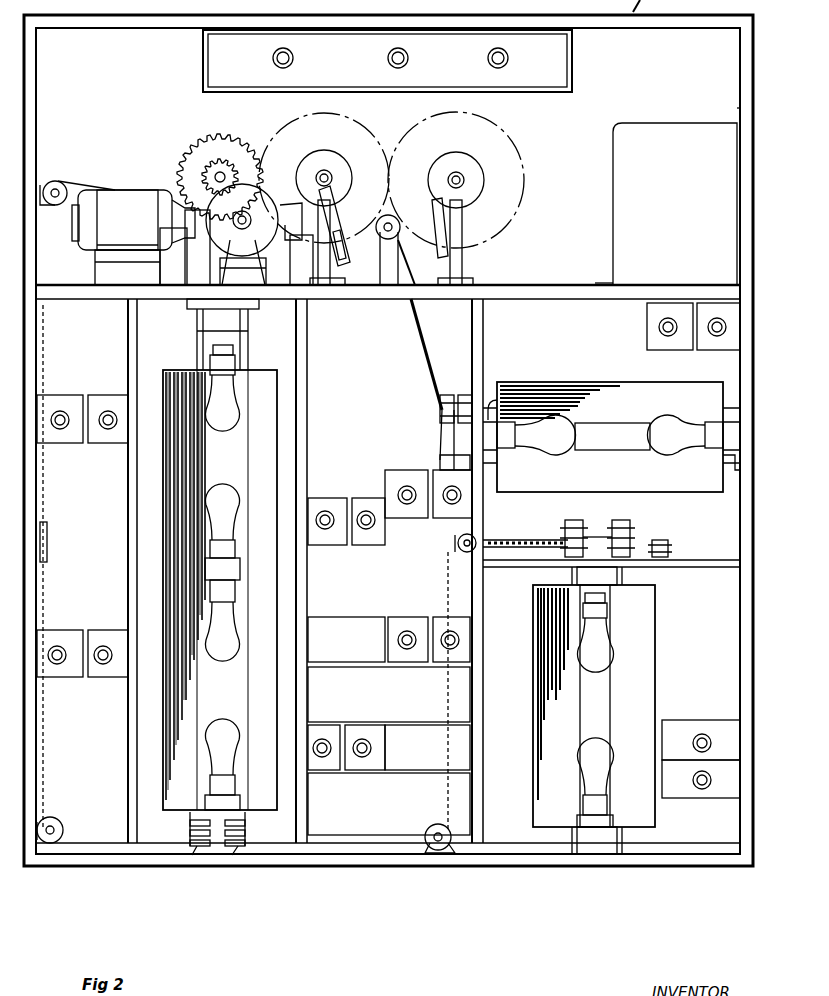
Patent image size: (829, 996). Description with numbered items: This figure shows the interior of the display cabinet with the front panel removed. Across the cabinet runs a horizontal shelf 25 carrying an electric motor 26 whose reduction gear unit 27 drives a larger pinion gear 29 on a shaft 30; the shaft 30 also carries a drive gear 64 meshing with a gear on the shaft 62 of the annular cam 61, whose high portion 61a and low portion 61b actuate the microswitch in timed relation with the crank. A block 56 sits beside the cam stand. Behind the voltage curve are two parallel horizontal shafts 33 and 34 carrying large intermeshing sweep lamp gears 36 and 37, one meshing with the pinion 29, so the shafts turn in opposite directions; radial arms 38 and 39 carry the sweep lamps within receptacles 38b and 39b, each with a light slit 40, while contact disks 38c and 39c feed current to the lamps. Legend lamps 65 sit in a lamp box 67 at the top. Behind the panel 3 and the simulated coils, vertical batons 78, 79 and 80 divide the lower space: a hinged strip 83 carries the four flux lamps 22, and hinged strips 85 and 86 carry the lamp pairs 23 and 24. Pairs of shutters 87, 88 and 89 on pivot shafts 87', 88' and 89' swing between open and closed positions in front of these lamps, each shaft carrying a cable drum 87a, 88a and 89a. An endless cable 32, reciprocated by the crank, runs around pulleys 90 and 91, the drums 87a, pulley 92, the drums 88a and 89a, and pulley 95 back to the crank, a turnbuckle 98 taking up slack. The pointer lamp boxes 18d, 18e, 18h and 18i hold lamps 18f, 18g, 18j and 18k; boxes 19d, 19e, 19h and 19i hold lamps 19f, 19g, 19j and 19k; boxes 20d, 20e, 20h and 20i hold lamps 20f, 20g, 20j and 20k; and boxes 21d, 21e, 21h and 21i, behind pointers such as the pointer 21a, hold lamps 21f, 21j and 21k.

The panel 3 is at (150, 182).
The electric lamps 22 is at (232, 425).
The lamps 23 is at (652, 416).
The lamps 24 is at (613, 735).
The horizontal shelf 25 is at (555, 288).
The electric motor 26 is at (128, 225).
The reduction gear unit 27 is at (138, 257).
The larger pinion gear 29 is at (200, 150).
The shaft 30 is at (215, 175).
The cable 32 is at (420, 355).
The horizontal shaft 33 is at (460, 176).
The horizontal shaft 34 is at (324, 170).
The sweep lamp gear 36 is at (512, 163).
The sweep lamp gear 37 is at (292, 126).
The sweep lamp support arm 38 is at (338, 215).
The receptacle or cam 38b is at (462, 258).
The rotary electrical contact supporting disk 38c is at (332, 172).
The sweep lamp support arm 39 is at (460, 208).
The receptacle or cam 39b is at (345, 274).
The rotary electrical contact supporting disk 39c is at (445, 160).
The light slit 40 is at (345, 248).
The block 56 is at (292, 262).
The annular cam 61 is at (250, 205).
The high portion 61a is at (262, 190).
The low portion 61b is at (216, 238).
The shaft 62 is at (242, 229).
The drive gear 64 is at (222, 172).
The Voltage Curve legend lamps 65 is at (476, 59).
The lamp box 67 is at (578, 70).
The vertical baton 78 is at (127, 348).
The vertical baton 79 is at (308, 352).
The vertical baton 80 is at (484, 345).
The supporting strip 83 is at (228, 706).
The hinged strip 85 is at (614, 443).
The hinged strip 86 is at (598, 709).
The shutters 87 is at (221, 577).
The pivot shaft 87' is at (203, 561).
The cable drum 87a is at (202, 854).
The shutters 88 is at (611, 436).
The pivot shaft 88' is at (508, 389).
The cable drum 88a is at (438, 450).
The shutters 89 is at (593, 706).
The pivot shaft 89' is at (600, 710).
The cable drum 89a is at (565, 525).
The pulley 90 is at (58, 182).
The pulley 91 is at (62, 828).
The pulley 92 is at (392, 215).
The pulley 95 is at (458, 546).
The turnbuckle 98 is at (50, 522).
The lamp box 18d is at (57, 455).
The lamp box 18e is at (100, 455).
The lamp 18f is at (60, 411).
The lamp 18g is at (108, 411).
The lamp box 18h is at (325, 555).
The lamp box 18i is at (368, 555).
The lamp 18j is at (325, 511).
The lamp 18k is at (368, 548).
The lamp box 19d is at (98, 690).
The lamp box 19e is at (55, 690).
The lamp 19f is at (103, 646).
The lamp 19g is at (58, 646).
The lamp box 19h is at (368, 784).
The lamp box 19i is at (322, 784).
The lamp 19j is at (322, 739).
The lamp 19k is at (364, 739).
The lamp box 20d is at (405, 520).
The lamp box 20e is at (400, 487).
The lamp 20f is at (462, 496).
The lamp 20g is at (426, 533).
The lamp box 20h is at (706, 345).
The lamp box 20i is at (659, 328).
The lamp 20j is at (726, 328).
The lamp 20k is at (665, 340).
The pointer 21a is at (398, 642).
The lamp box 21d is at (442, 610).
The lamp box 21e is at (398, 624).
The lamp 21f is at (460, 641).
The lamp box 21h is at (680, 790).
The lamp box 21i is at (692, 730).
The lamp 21j is at (712, 780).
The lamp 21k is at (712, 743).